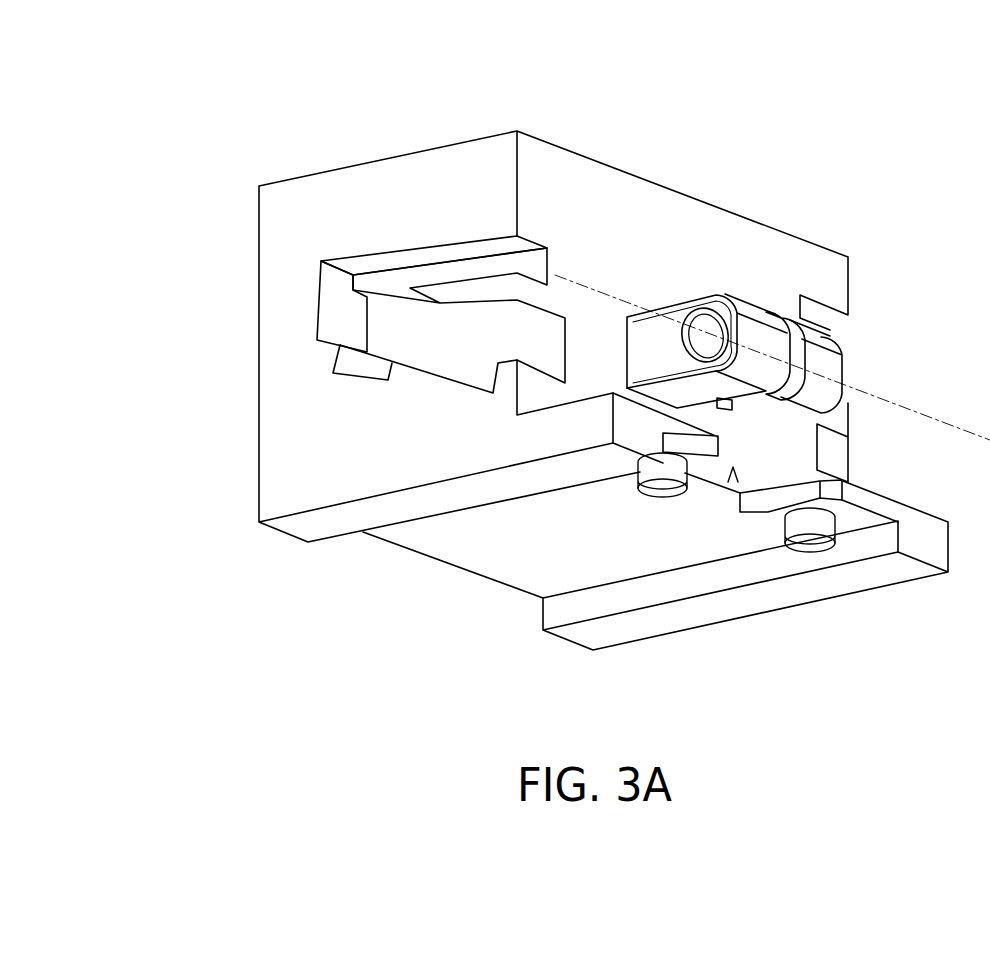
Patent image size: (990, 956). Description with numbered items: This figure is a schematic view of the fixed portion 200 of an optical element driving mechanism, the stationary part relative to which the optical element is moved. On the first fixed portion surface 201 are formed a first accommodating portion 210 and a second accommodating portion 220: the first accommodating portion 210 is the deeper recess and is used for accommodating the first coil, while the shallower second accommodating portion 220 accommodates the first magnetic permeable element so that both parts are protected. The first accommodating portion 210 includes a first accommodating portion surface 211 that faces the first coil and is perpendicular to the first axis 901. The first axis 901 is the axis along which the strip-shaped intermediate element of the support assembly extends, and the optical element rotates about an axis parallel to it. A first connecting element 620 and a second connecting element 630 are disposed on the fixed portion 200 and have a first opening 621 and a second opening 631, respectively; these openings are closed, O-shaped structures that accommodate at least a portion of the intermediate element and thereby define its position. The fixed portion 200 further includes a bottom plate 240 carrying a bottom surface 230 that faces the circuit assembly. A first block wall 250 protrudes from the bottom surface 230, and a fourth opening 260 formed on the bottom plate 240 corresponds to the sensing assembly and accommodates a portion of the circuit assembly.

The fixed portion 200 is at (121, 99).
The first fixed portion surface 201 is at (307, 233).
The first accommodating portion 210 is at (437, 362).
The first accommodating portion surface 211 is at (400, 317).
The second accommodating portion 220 is at (353, 282).
The first axis 901 is at (458, 241).
The first connecting element 620 is at (707, 262).
The first opening 621 is at (708, 330).
The second connecting element 630 is at (818, 363).
The second opening 631 is at (797, 357).
The bottom plate 240 is at (777, 500).
The first block wall 250 is at (638, 432).
The fourth opening 260 is at (733, 485).
The bottom surface 230 is at (663, 525).